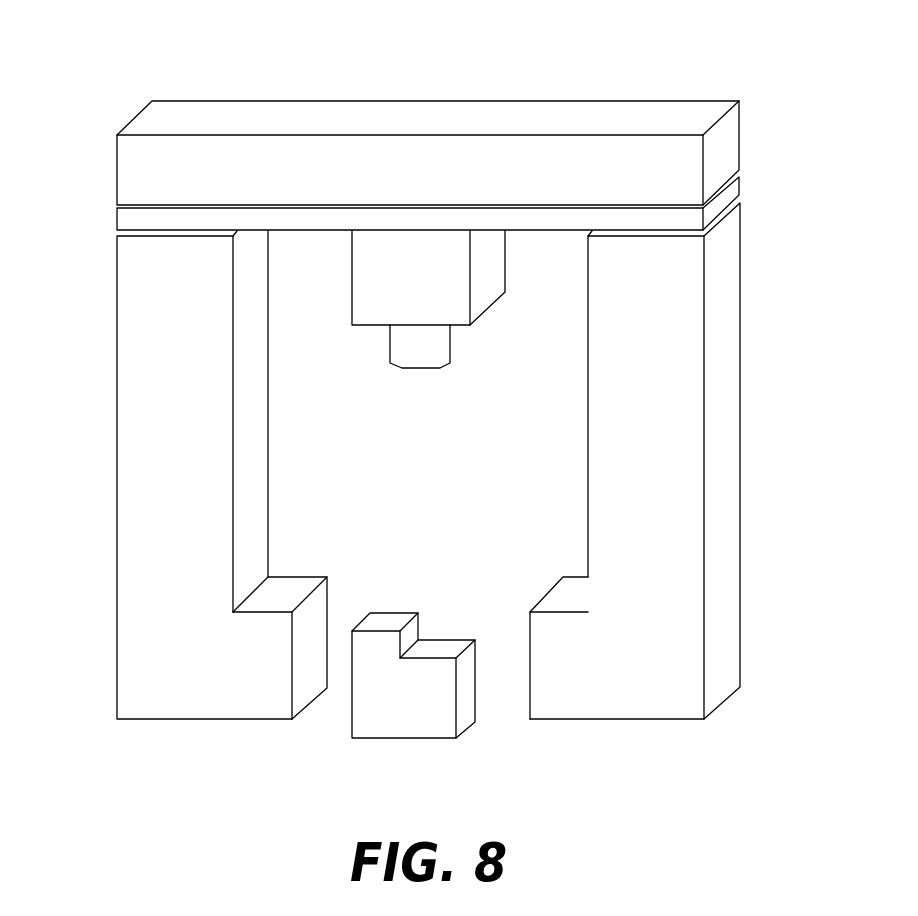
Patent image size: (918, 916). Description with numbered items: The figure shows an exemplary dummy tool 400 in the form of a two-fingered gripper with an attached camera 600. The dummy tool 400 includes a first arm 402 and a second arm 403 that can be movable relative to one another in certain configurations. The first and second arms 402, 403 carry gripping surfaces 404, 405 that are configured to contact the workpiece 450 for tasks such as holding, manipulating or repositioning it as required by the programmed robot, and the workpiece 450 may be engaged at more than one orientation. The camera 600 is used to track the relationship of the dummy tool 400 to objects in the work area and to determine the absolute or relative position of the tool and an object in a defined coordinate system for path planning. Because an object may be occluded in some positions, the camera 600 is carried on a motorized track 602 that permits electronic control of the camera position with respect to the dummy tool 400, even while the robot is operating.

The dummy tool 400 is at (293, 100).
The motorized track 602 is at (513, 220).
The first arm 402 is at (138, 405).
The second arm 403 is at (680, 424).
The gripping surface 404 is at (308, 634).
The gripping surface 405 is at (527, 657).
The camera 600 is at (393, 282).
The workpiece 450 is at (392, 693).